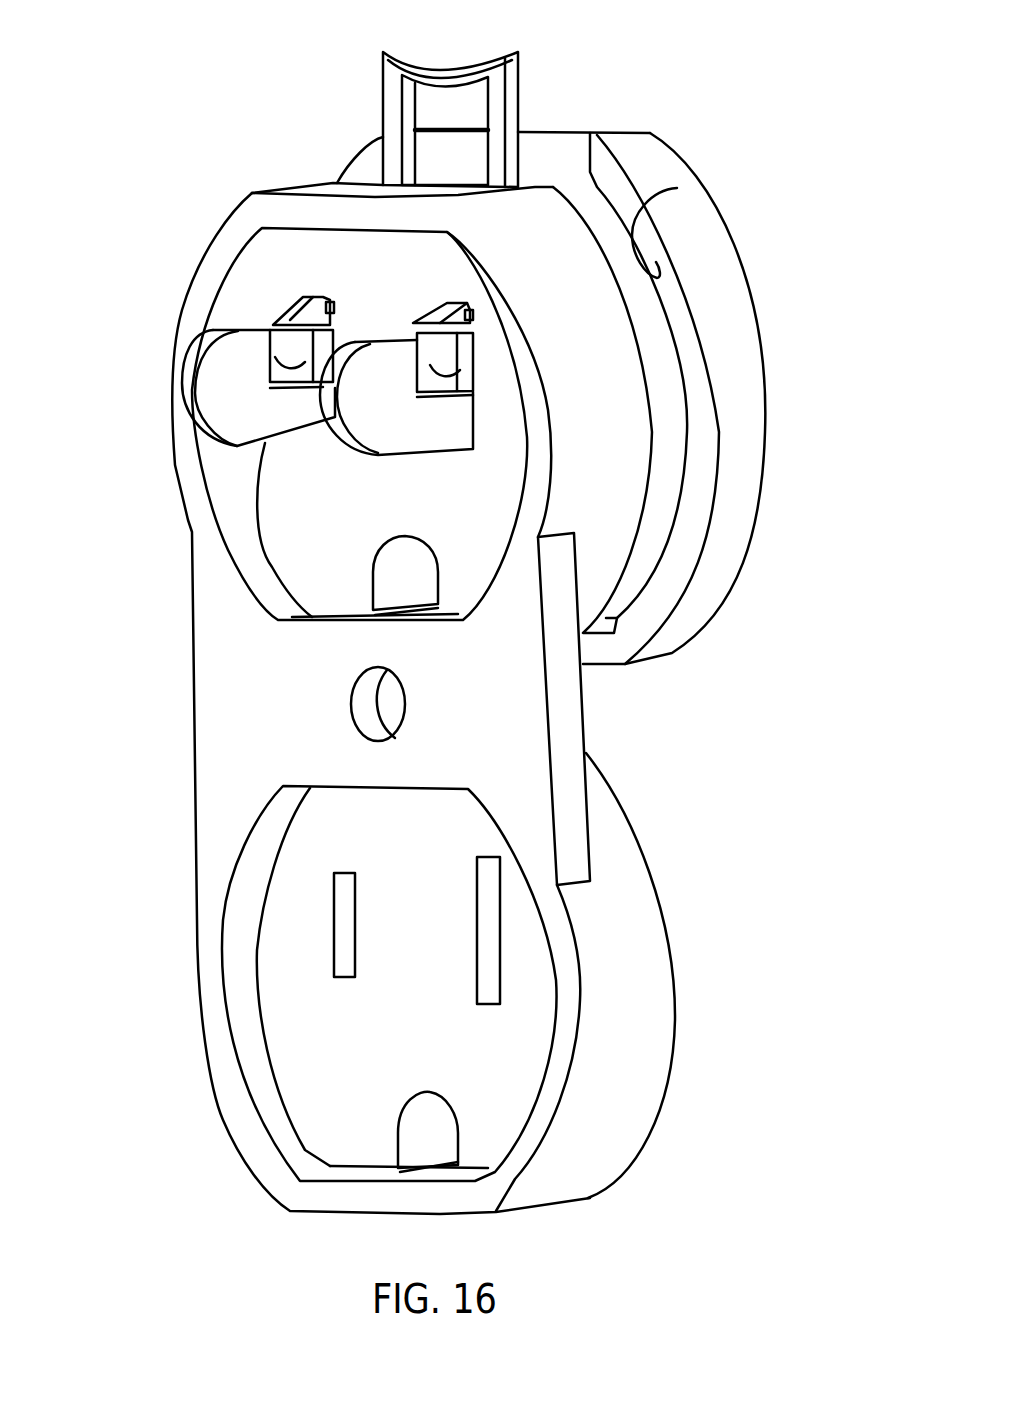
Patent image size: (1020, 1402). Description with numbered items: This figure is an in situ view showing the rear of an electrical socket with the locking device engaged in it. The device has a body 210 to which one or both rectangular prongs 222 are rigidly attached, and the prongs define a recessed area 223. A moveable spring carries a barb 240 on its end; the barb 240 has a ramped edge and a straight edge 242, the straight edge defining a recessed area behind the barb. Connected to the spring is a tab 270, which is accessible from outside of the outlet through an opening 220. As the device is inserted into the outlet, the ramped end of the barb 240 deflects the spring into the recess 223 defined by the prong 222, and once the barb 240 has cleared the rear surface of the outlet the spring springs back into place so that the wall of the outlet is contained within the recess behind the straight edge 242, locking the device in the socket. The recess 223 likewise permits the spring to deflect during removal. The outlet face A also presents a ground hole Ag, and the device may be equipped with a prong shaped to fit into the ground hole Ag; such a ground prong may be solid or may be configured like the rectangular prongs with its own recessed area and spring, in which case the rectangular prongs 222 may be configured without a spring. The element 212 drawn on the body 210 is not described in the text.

The body 210 is at (725, 548).
The slot in ring 212 is at (677, 188).
The opening 220 is at (580, 131).
The rectangular prongs 222 is at (185, 397).
The recessed area 223 is at (287, 360).
The barb 240 is at (290, 300).
The straight edge 242 is at (323, 297).
The tab 270 is at (516, 70).
The outlet receptacle A is at (638, 1023).
The ground hole Ag is at (425, 1133).